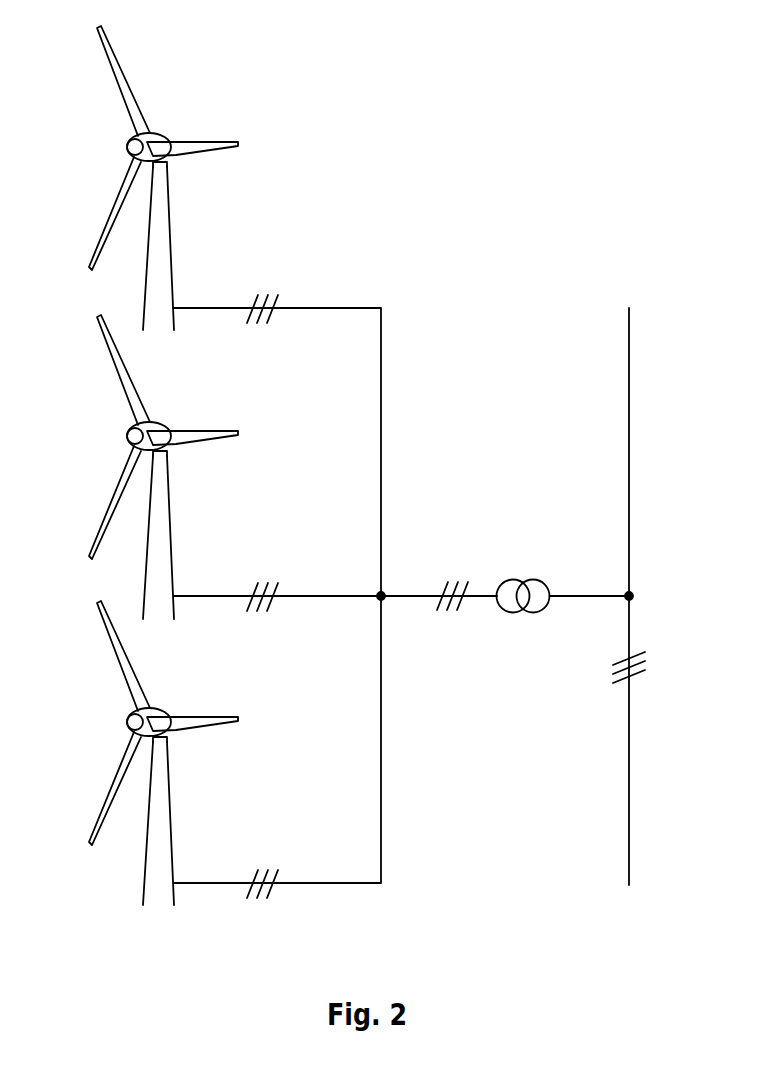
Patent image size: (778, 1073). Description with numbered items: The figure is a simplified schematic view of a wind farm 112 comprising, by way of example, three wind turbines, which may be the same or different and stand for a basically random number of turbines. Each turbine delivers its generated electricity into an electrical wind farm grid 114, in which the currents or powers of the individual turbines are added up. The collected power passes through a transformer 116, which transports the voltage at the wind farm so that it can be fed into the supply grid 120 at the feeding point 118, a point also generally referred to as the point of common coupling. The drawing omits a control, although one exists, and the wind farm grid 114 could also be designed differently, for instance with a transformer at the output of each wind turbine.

The wind farm 112 is at (447, 146).
The wind farm grid 114 is at (402, 596).
The transformer 116 is at (524, 575).
The feeding point 118 is at (638, 580).
The supply grid 120 is at (629, 340).